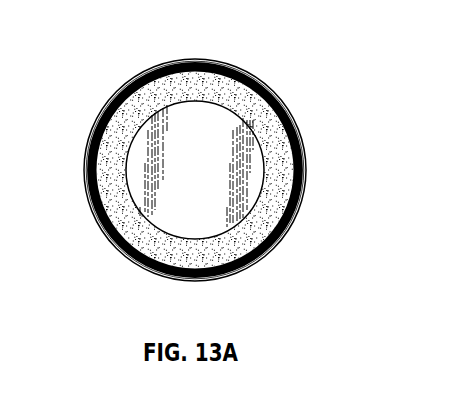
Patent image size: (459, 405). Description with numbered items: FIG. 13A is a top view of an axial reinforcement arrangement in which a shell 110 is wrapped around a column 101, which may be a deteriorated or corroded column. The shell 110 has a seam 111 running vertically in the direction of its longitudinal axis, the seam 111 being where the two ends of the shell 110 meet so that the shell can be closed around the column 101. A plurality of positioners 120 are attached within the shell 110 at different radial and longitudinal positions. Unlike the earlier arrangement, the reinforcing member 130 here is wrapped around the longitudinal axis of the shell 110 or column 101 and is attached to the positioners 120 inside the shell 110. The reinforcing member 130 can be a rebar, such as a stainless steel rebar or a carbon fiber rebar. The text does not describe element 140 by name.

The column 101 is at (255, 158).
The shell 110 is at (163, 65).
The seam 111 is at (197, 63).
The positioners 120 is at (252, 73).
The reinforcing member 130 is at (163, 267).
The inner wall 140 is at (275, 245).